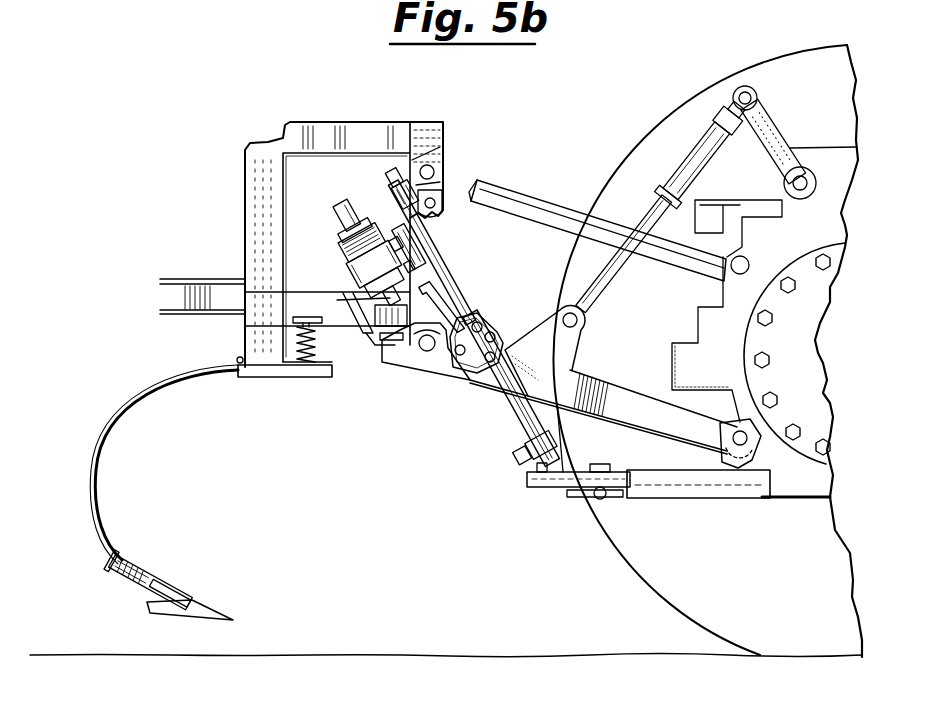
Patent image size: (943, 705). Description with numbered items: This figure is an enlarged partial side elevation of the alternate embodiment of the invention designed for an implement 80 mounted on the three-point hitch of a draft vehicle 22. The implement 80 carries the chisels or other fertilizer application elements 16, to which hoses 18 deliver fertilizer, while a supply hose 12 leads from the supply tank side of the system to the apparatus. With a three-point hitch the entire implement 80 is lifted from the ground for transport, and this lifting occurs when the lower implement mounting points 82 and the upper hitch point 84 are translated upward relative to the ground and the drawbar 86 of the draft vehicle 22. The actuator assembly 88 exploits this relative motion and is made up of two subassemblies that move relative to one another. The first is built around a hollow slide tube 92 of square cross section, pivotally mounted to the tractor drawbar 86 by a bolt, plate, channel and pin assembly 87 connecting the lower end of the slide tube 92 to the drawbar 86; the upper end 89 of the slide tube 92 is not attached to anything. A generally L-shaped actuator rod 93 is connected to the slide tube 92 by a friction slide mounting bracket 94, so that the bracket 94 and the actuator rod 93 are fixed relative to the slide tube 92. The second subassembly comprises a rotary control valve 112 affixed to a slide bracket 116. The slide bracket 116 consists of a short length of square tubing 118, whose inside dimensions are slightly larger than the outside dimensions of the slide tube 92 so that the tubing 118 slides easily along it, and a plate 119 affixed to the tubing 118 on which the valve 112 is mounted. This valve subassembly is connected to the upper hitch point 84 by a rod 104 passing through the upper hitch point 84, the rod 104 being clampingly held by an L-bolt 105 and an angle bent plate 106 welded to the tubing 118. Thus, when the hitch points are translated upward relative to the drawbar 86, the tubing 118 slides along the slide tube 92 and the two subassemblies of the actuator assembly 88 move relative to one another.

The supply hose 12 is at (340, 203).
The fertilizer application elements 16 is at (220, 609).
The hoses 18 is at (110, 576).
The draft vehicle 22 is at (708, 90).
The implement 80 is at (366, 360).
The lower implement mounting points 82 is at (424, 350).
The upper hitch point 84 is at (443, 162).
The drawbar 86 is at (619, 497).
The bolt, plate, channel and pin assembly 87 is at (566, 465).
The actuator assembly 88 is at (477, 266).
The upper end of the slide tube 89 is at (405, 197).
The slide tube 92 is at (507, 423).
The actuator rod 93 is at (462, 298).
The friction slide mounting bracket 94 is at (490, 322).
The rod 104 is at (447, 203).
The L-bolt 105 is at (481, 186).
The angle bent plate 106 is at (444, 243).
The rotary control valve 112 is at (350, 265).
The slide bracket 116 is at (448, 246).
The square tubing 118 is at (392, 212).
The plate 119 is at (370, 320).